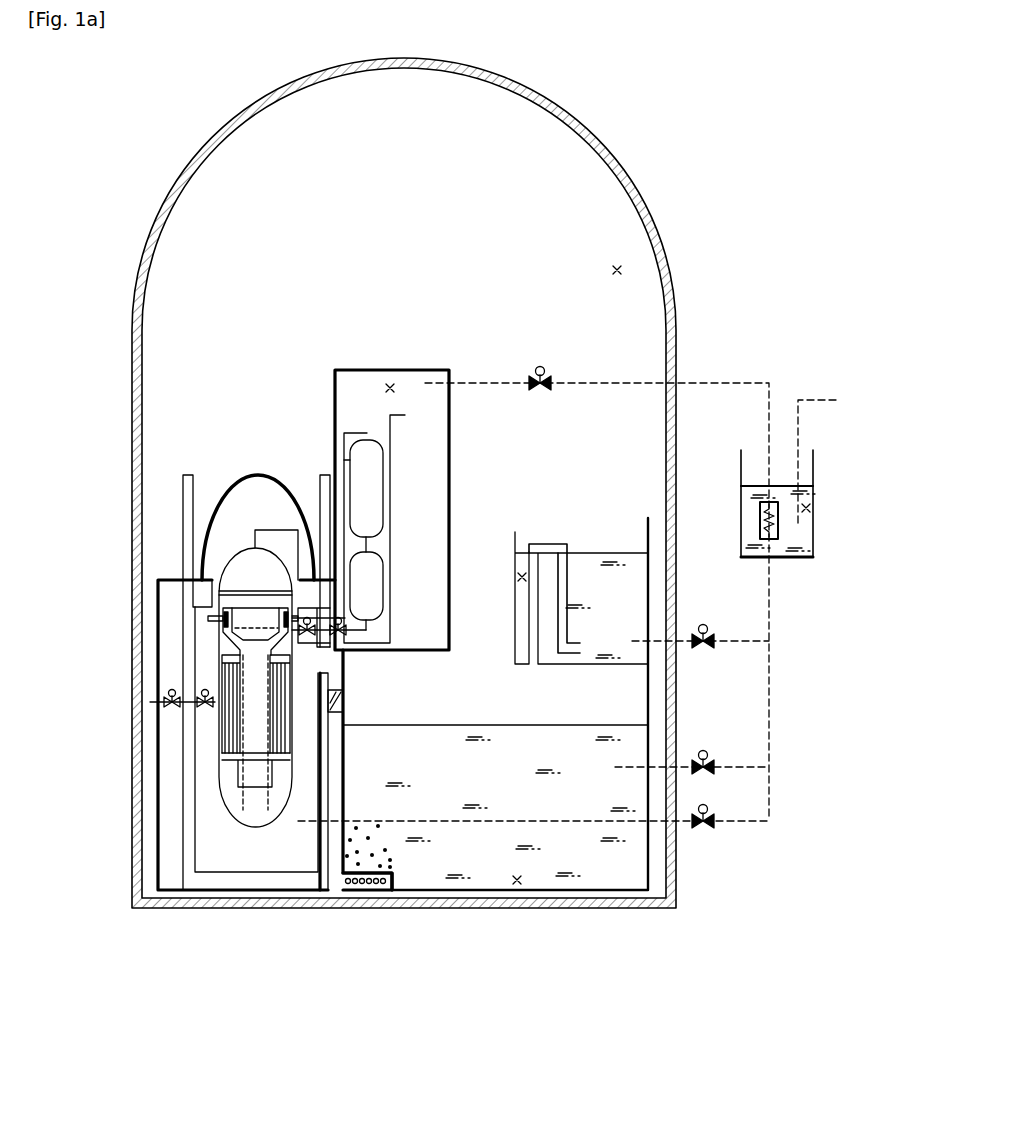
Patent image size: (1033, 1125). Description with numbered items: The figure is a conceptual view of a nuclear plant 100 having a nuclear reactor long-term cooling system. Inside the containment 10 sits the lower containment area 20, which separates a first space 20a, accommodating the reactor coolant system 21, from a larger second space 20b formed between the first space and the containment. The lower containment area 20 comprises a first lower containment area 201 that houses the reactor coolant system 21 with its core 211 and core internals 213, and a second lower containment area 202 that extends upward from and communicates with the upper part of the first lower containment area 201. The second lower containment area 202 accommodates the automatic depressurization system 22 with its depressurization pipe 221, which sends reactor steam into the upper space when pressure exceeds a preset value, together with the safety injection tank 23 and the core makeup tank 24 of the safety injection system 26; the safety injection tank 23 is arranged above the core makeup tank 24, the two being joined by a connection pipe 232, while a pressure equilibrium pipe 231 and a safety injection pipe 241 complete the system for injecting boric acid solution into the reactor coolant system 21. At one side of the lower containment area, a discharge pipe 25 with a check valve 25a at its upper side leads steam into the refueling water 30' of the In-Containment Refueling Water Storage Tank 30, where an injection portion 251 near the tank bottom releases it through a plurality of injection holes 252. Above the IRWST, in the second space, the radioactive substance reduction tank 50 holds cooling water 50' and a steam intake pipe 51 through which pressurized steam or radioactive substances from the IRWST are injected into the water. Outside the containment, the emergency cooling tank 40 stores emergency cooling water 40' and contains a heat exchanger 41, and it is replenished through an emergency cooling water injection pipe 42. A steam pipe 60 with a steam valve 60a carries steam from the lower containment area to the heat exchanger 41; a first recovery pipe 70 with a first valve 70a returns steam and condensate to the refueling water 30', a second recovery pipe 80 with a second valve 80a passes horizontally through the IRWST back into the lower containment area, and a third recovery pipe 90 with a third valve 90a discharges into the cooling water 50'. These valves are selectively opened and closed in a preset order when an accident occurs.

The nuclear plant 100 is at (645, 117).
The containment 10 is at (637, 198).
The lower containment area 20 is at (68, 410).
The first space 20a is at (390, 386).
The second space 20b is at (617, 270).
The reactor coolant system 21 is at (186, 629).
The core 211 is at (222, 778).
The reactor core 213 is at (222, 748).
The first lower containment area 201 is at (158, 634).
The second lower containment area 202 is at (335, 413).
The automatic depressurization system 22 is at (390, 441).
The depressurization pipe 221 is at (391, 462).
The safety injection tank 23 is at (383, 494).
The pressure equilibrium pipe 231 is at (344, 460).
The connection pipe 232 is at (368, 546).
The core makeup tank 24 is at (383, 585).
The safety injection pipe 241 is at (368, 629).
The discharge pipe 25 is at (345, 771).
The check valve 25a is at (345, 702).
The injection portion 251 is at (350, 893).
The injection holes 252 is at (382, 893).
The safety injection system 26 is at (354, 433).
The In-Containment Refueling Water Storage Tank 30 is at (520, 738).
The refueling water 30' is at (575, 847).
The emergency cooling tank 40 is at (804, 503).
The emergency cooling water 40' is at (809, 531).
The heat exchanger 41 is at (779, 522).
The emergency cooling water injection pipe 42 is at (818, 398).
The radioactive substance reduction tank 50 is at (555, 598).
The cooling water 50' is at (595, 582).
The steam intake pipe 51 is at (548, 543).
The steam pipe 60 is at (590, 382).
The steam valve 60a is at (540, 366).
The first recovery pipe 70 is at (745, 766).
The first valve 70a is at (703, 750).
The second recovery pipe 80 is at (745, 822).
The second valve 80a is at (705, 830).
The third recovery pipe 90 is at (745, 640).
The third valve 90a is at (703, 624).